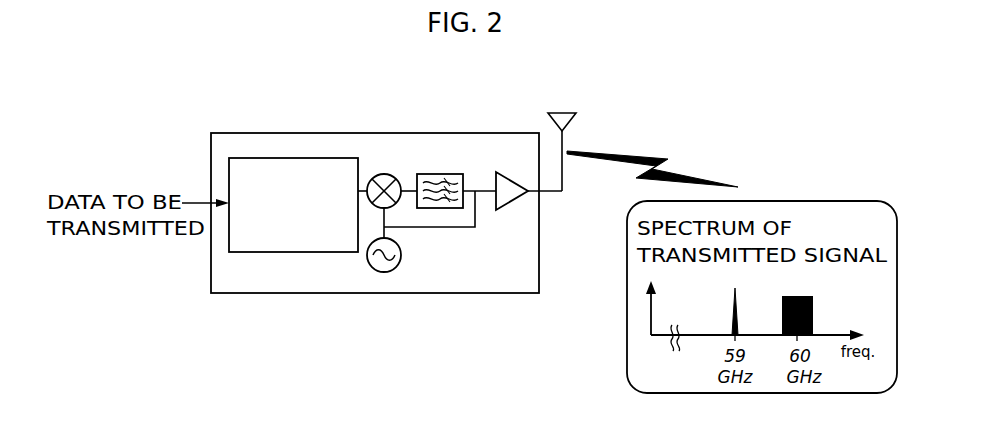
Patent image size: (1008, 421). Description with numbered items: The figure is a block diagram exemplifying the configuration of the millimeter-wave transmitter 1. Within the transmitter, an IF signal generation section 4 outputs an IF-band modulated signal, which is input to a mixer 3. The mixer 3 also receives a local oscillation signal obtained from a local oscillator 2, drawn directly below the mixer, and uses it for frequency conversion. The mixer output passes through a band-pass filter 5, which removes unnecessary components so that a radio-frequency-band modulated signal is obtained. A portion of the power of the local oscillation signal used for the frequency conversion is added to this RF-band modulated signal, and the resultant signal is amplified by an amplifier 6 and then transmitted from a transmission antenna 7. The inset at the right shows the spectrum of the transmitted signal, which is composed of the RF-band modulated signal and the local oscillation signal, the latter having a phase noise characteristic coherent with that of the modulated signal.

The millimeter-wave transmitter 1 is at (352, 186).
The local oscillator 2 is at (381, 271).
The mixer 3 is at (390, 178).
The IF signal generation section 4 is at (290, 240).
The band-pass filter 5 is at (455, 205).
The amplifier 6 is at (510, 195).
The transmission antenna 7 is at (570, 117).